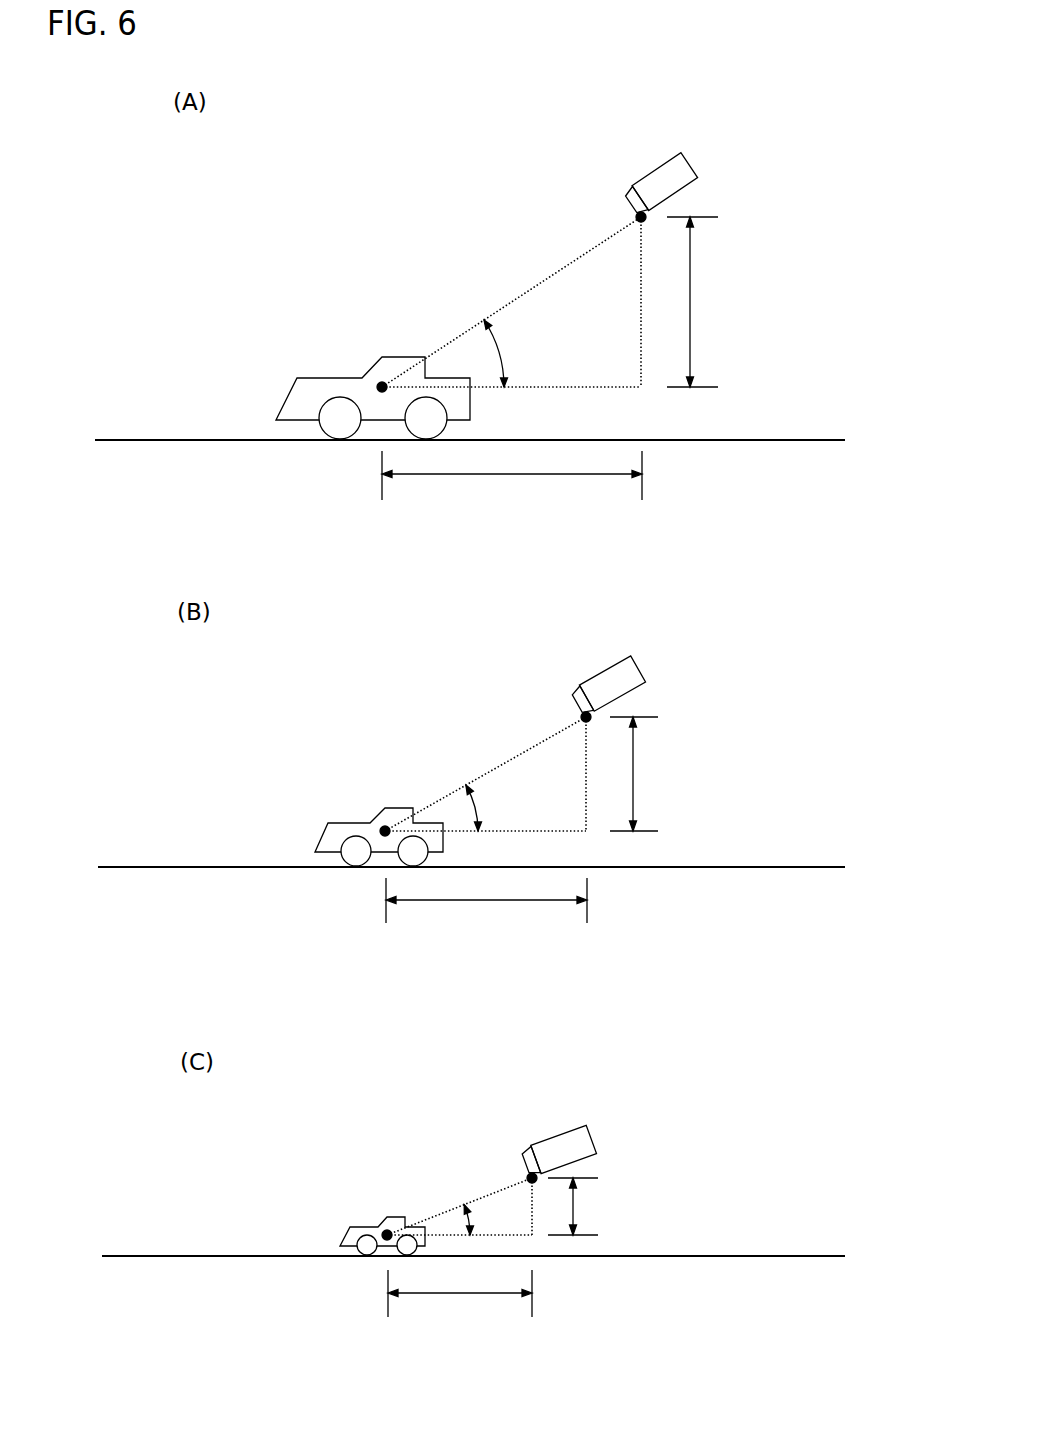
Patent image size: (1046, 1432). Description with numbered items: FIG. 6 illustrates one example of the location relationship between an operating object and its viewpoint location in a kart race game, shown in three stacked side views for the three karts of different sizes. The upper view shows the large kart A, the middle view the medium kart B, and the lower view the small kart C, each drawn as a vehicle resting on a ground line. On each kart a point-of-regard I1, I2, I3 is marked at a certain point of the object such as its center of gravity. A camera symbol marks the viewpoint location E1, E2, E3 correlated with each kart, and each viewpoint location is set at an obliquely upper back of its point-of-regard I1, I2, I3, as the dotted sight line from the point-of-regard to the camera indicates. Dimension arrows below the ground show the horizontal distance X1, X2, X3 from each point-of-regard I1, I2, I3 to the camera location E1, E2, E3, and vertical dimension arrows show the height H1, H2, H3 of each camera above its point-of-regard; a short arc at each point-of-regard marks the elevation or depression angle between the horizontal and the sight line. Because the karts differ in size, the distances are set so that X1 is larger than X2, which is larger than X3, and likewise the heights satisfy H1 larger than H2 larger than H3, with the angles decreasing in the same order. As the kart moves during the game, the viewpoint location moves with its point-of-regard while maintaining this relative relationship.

The kart A is at (296, 389).
The kart B is at (327, 845).
The kart C is at (349, 1239).
The point-of-regard I1 is at (357, 368).
The point-of-regard I2 is at (367, 811).
The point-of-regard I3 is at (373, 1214).
The viewpoint location E1 is at (634, 187).
The viewpoint location E2 is at (584, 689).
The viewpoint location E3 is at (532, 1154).
The height H1 is at (699, 302).
The height H2 is at (641, 774).
The height H3 is at (588, 1206).
The distance X1 is at (512, 481).
The distance X2 is at (486, 908).
The distance X3 is at (460, 1299).